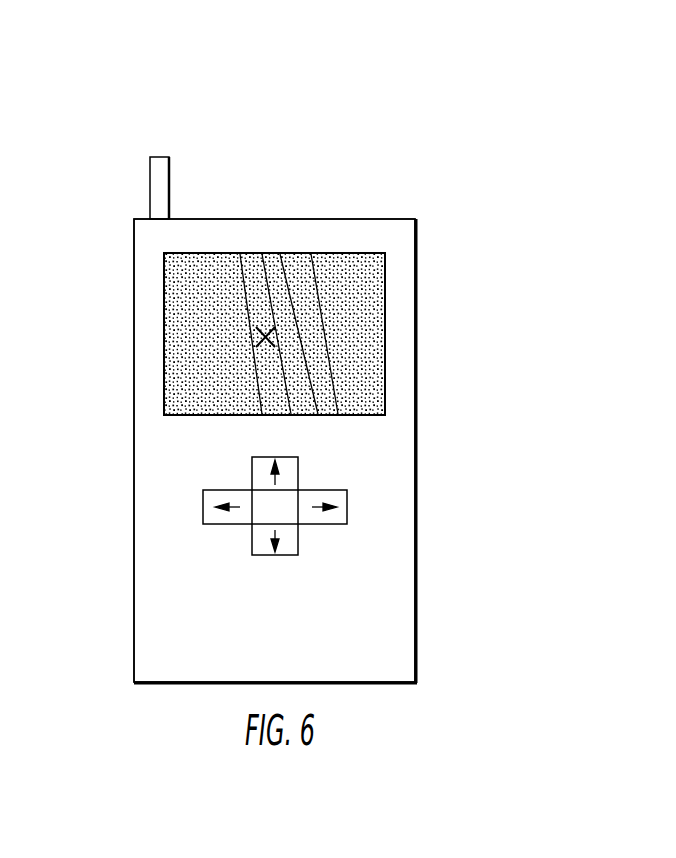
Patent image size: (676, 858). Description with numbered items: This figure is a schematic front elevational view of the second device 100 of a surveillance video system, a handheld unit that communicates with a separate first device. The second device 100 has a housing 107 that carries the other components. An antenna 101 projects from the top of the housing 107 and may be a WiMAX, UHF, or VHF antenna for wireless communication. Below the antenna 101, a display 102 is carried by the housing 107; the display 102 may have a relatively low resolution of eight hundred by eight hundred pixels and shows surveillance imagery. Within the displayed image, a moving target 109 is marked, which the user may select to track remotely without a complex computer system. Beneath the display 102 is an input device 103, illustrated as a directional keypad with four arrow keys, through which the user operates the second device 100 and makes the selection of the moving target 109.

The second device 100 is at (457, 131).
The antenna 101 is at (169, 180).
The display 102 is at (385, 337).
The input device 103 is at (298, 468).
The housing 107 is at (415, 249).
The moving target 109 is at (262, 336).